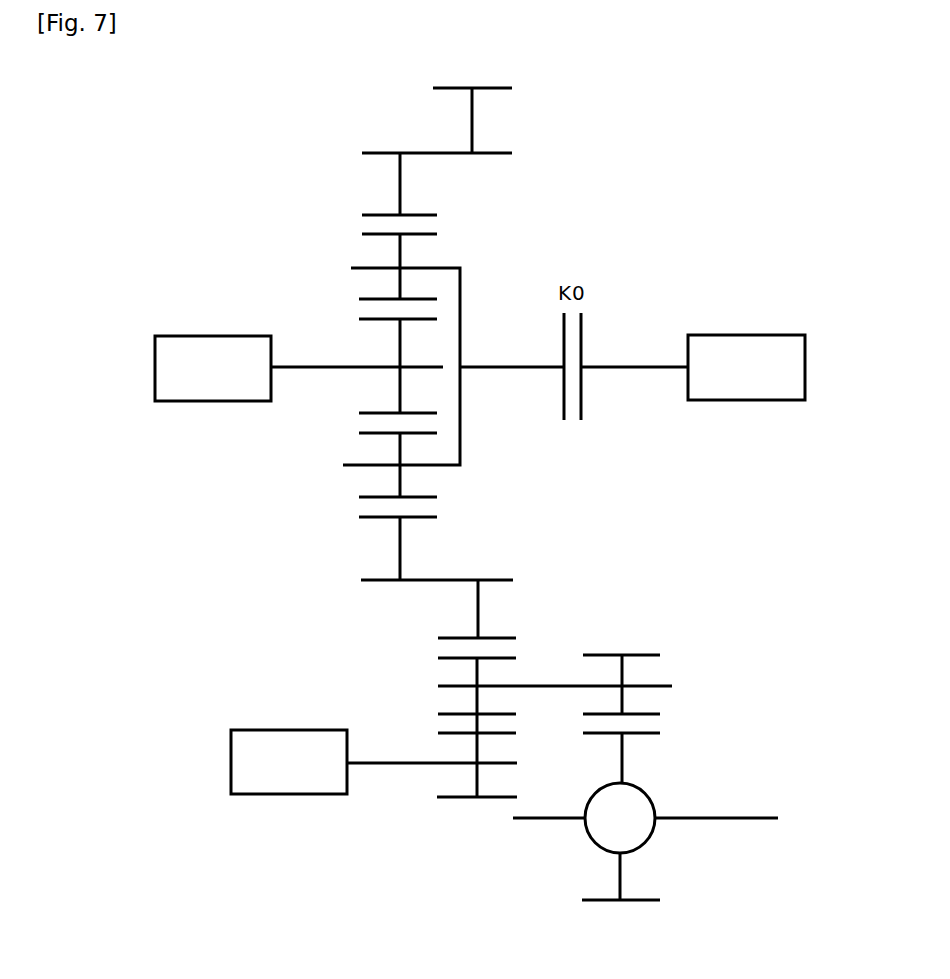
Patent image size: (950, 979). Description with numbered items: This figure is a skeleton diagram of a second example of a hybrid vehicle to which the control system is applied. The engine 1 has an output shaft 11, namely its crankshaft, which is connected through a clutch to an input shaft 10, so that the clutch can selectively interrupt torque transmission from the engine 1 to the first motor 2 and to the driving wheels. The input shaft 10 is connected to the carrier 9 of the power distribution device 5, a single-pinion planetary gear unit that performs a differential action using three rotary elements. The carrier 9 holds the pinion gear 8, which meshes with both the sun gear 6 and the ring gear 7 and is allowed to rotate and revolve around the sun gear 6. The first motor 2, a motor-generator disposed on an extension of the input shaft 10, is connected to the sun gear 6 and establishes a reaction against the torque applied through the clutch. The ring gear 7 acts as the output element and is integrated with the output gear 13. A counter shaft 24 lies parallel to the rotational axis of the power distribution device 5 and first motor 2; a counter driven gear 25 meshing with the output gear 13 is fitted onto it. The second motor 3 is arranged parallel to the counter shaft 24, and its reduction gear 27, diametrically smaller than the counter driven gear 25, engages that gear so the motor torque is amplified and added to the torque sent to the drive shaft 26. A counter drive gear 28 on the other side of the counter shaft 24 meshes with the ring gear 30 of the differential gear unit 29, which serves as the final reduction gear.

The engine 1 is at (746, 335).
The first motor 2 is at (225, 336).
The second motor 3 is at (283, 794).
The power distribution device 5 is at (330, 235).
The sun gear 6 is at (417, 320).
The ring gear 7 is at (425, 213).
The pinion gear 8 is at (427, 235).
The carrier 9 is at (462, 293).
The input shaft 10 is at (514, 367).
The output shaft 11 is at (640, 367).
The output gear 13 is at (472, 120).
The counter shaft 24 is at (560, 686).
The counter driven gear 25 is at (450, 660).
The drive shaft 26 is at (758, 818).
The reduction gear 27 is at (460, 797).
The counter drive gear 28 is at (640, 655).
The differential gear unit 29 is at (674, 764).
The ring gear 30 is at (640, 900).